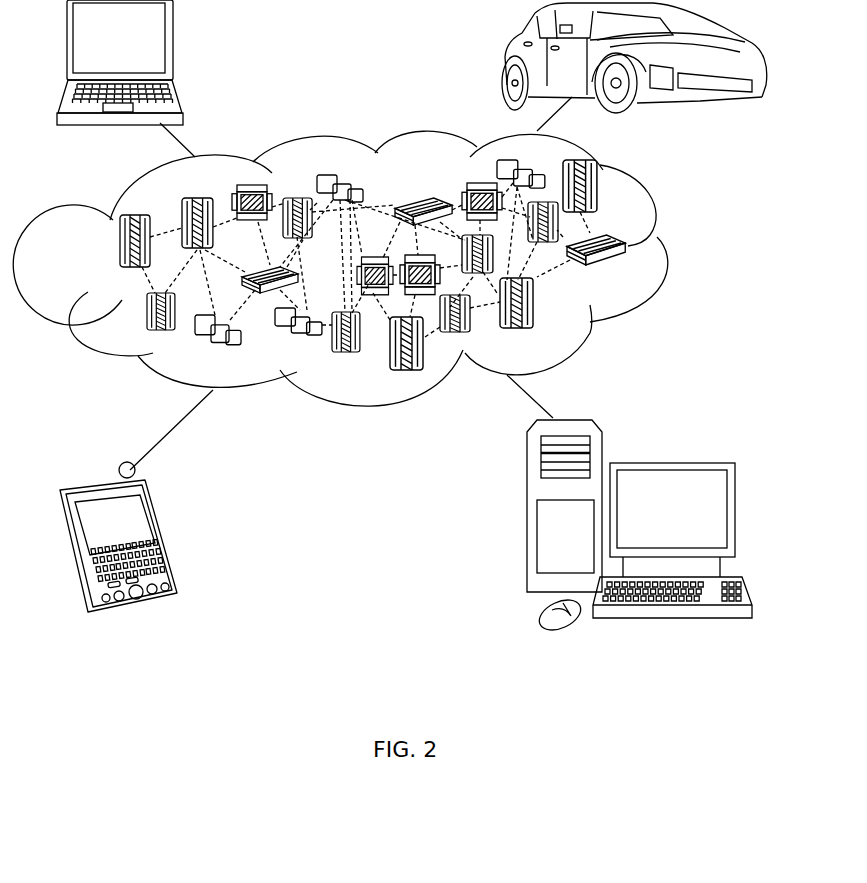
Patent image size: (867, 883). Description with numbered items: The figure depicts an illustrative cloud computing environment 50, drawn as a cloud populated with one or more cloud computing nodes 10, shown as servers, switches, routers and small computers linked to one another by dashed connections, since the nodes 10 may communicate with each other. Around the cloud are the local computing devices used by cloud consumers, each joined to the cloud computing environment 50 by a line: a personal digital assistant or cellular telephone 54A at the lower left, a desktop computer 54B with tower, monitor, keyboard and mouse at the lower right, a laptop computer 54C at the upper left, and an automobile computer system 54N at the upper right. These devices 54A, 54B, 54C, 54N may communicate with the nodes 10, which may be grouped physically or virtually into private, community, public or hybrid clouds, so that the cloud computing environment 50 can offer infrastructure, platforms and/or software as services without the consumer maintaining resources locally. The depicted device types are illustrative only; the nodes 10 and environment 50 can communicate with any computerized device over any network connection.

The cloud computing node 10 is at (622, 270).
The cloud computing environment 50 is at (672, 247).
The personal digital assistant or cellular telephone 54A is at (163, 533).
The desktop computer 54B is at (670, 462).
The laptop computer 54C is at (173, 47).
The automobile computer system 54N is at (503, 58).